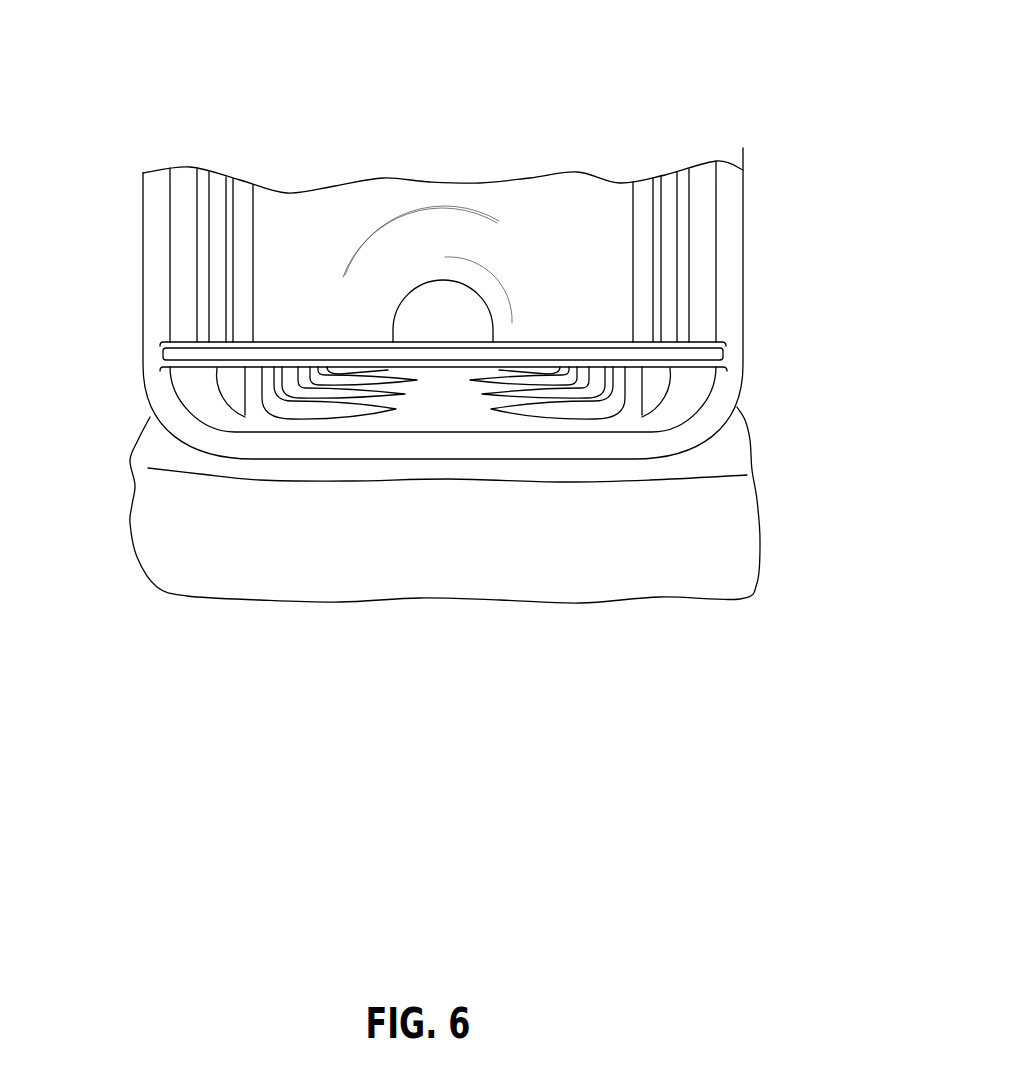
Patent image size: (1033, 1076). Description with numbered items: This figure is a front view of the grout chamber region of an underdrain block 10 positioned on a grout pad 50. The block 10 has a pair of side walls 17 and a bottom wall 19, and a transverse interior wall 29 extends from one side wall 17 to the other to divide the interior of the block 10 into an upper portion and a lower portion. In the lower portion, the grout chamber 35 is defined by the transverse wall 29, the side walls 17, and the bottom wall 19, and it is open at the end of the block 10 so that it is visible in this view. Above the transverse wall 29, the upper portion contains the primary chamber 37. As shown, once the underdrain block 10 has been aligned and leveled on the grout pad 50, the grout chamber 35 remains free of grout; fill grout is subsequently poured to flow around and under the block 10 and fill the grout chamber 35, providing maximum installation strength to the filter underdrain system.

The underdrain block 10 is at (668, 153).
The side wall 17 is at (733, 272).
The bottom wall 19 is at (257, 443).
The transverse interior wall 29 is at (243, 352).
The grout chamber 35 is at (454, 399).
The primary chamber 37 is at (454, 316).
The grout pad 50 is at (723, 540).